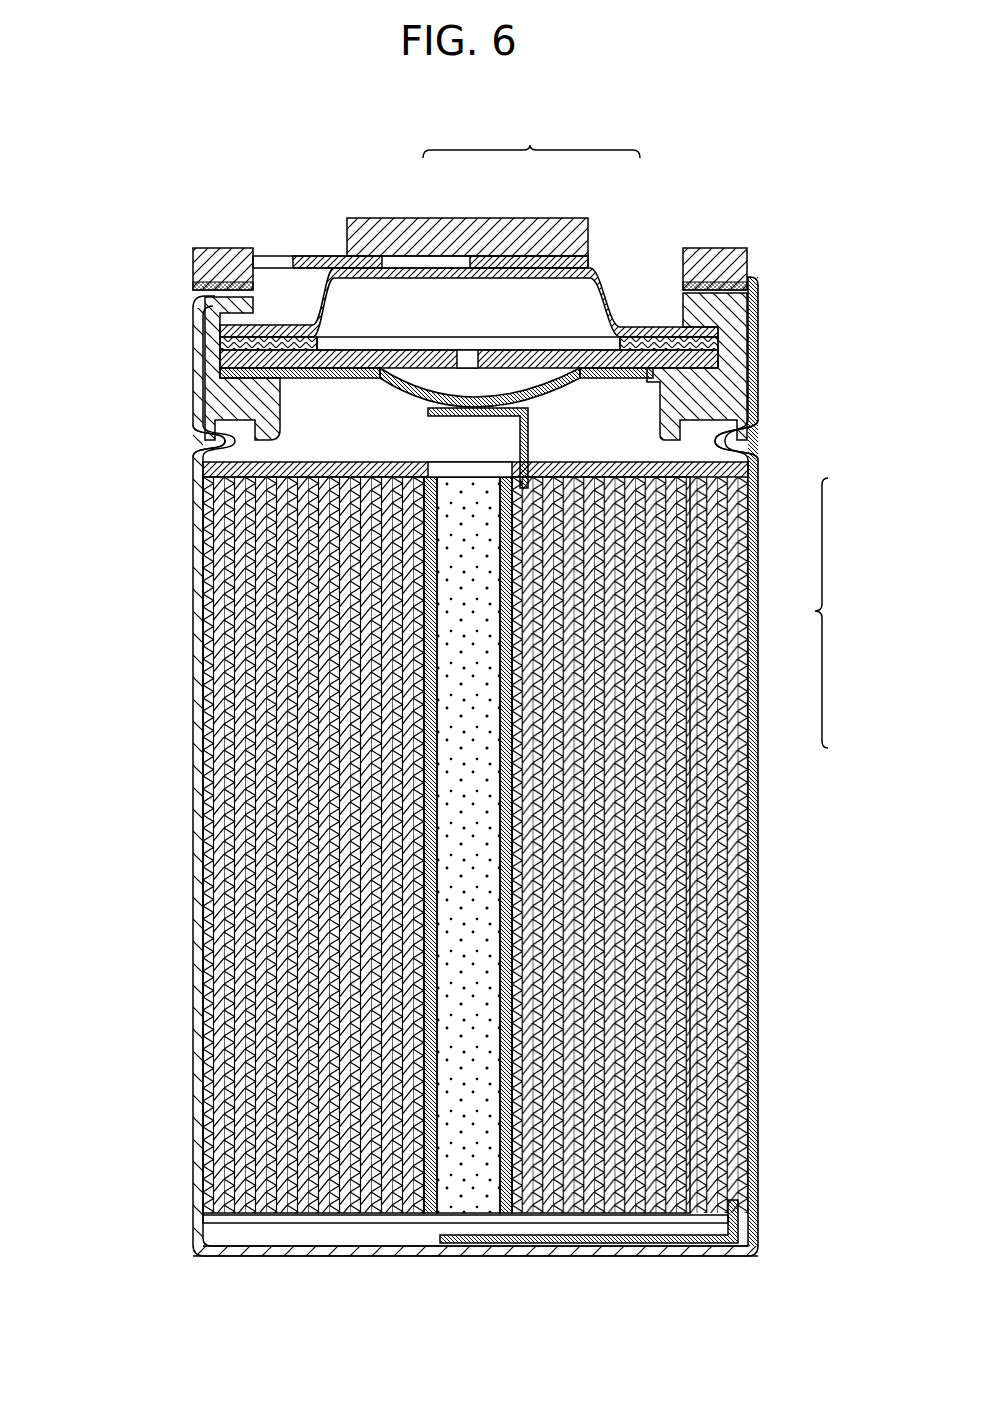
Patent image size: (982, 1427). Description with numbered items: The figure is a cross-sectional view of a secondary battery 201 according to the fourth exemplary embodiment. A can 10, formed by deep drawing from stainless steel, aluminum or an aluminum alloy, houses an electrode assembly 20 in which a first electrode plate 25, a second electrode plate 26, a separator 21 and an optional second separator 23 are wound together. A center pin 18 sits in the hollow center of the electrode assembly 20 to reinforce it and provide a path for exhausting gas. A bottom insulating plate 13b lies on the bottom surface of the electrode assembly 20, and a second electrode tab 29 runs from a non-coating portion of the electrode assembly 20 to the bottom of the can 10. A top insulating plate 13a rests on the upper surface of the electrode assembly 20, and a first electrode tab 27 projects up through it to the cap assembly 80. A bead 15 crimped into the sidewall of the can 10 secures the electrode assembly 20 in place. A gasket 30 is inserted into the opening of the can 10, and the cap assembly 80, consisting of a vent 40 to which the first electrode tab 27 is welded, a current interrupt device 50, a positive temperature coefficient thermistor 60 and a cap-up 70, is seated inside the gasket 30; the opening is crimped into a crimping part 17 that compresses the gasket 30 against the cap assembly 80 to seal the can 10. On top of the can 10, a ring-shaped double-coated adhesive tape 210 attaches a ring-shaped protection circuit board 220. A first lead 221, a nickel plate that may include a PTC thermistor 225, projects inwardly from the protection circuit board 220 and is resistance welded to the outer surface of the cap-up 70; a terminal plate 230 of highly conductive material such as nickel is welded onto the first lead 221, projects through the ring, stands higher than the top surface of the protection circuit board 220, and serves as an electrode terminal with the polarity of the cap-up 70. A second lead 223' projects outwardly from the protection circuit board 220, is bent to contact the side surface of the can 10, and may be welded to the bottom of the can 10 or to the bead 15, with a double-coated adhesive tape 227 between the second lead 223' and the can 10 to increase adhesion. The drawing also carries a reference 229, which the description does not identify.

The secondary battery 201 is at (740, 109).
The can 10 is at (200, 578).
The top insulating plate 13a is at (213, 442).
The bottom insulating plate 13b is at (342, 1224).
The bead 15 is at (203, 432).
The crimping part 17 is at (226, 252).
The center pin 18 is at (448, 646).
The electrode assembly 20 is at (483, 872).
The separator 21 is at (712, 590).
The second separator 23 is at (693, 663).
The first electrode plate 25 is at (700, 625).
The second electrode plate 26 is at (723, 545).
The first electrode tab 27 is at (580, 468).
The second electrode tab 29 is at (662, 1244).
The gasket 30 is at (722, 308).
The vent 40 is at (318, 333).
The current interrupt device 50 is at (580, 366).
The positive temperature coefficient thermistor 60 is at (645, 326).
The cap-up 70 is at (527, 346).
The cap assembly 80 is at (531, 138).
The double-coated adhesive tape 210 is at (753, 284).
The protection circuit board 220 is at (740, 262).
The first lead 221 is at (268, 257).
The second lead 223' is at (800, 761).
The PTC thermistor 225 is at (315, 257).
The double-coated adhesive tape 227 is at (583, 378).
The crimp groove 229 is at (757, 442).
The terminal plate 230 is at (377, 225).